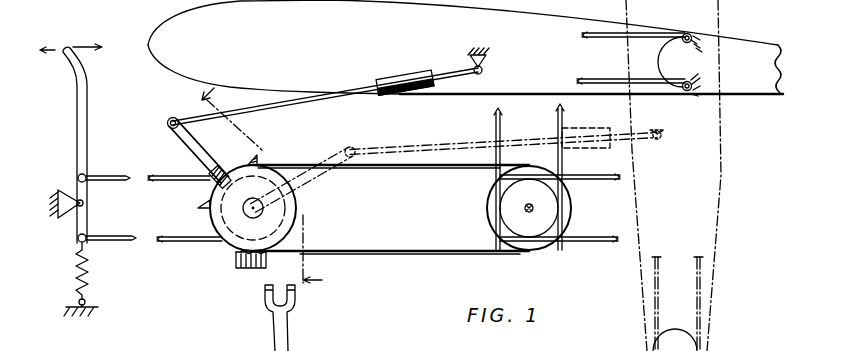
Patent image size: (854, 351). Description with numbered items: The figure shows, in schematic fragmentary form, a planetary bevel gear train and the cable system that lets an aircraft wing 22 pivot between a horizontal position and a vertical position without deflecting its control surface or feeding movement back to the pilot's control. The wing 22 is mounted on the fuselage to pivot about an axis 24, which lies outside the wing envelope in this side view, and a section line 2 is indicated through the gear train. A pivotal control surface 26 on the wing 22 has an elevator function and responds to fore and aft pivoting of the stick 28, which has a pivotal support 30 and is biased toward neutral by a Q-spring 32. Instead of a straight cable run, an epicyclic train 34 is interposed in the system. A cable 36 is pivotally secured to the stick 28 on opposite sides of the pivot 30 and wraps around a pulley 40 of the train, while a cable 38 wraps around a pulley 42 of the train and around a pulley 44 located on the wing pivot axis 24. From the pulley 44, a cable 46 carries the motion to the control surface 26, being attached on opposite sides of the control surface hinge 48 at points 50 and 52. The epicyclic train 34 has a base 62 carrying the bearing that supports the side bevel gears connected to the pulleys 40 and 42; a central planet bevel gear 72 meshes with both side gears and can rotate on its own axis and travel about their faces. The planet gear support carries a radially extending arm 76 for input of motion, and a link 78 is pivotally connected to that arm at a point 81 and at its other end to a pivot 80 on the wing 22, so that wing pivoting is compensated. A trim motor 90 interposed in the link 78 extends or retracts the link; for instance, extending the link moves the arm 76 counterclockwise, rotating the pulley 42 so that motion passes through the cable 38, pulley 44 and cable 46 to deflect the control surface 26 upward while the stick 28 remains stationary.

The section line 2- 2 is at (252, 195).
The wing 22 is at (332, 50).
The axis 24 is at (524, 209).
The pivotal control surface 26 is at (768, 85).
The stick 28 is at (85, 84).
The pivotal support 30 is at (74, 198).
The Q-spring 32 is at (88, 272).
The epicyclic train 34 is at (303, 208).
The cable 36 is at (172, 182).
The cable 38 is at (390, 250).
The pulley 40 is at (237, 250).
The pulley 42 is at (262, 195).
The pulley 44 is at (540, 233).
The cable 46 is at (595, 80).
The control surface hinge 48 is at (697, 65).
The attachment point 50 is at (686, 33).
The attachment point 52 is at (688, 92).
The base 62 is at (265, 262).
The central planet bevel gear 72 is at (260, 158).
The radially extending arm 76 is at (187, 152).
The link 78 is at (340, 102).
The pivot 80 is at (485, 68).
The pivotal connection 81 is at (167, 122).
The trim motor 90 is at (412, 78).